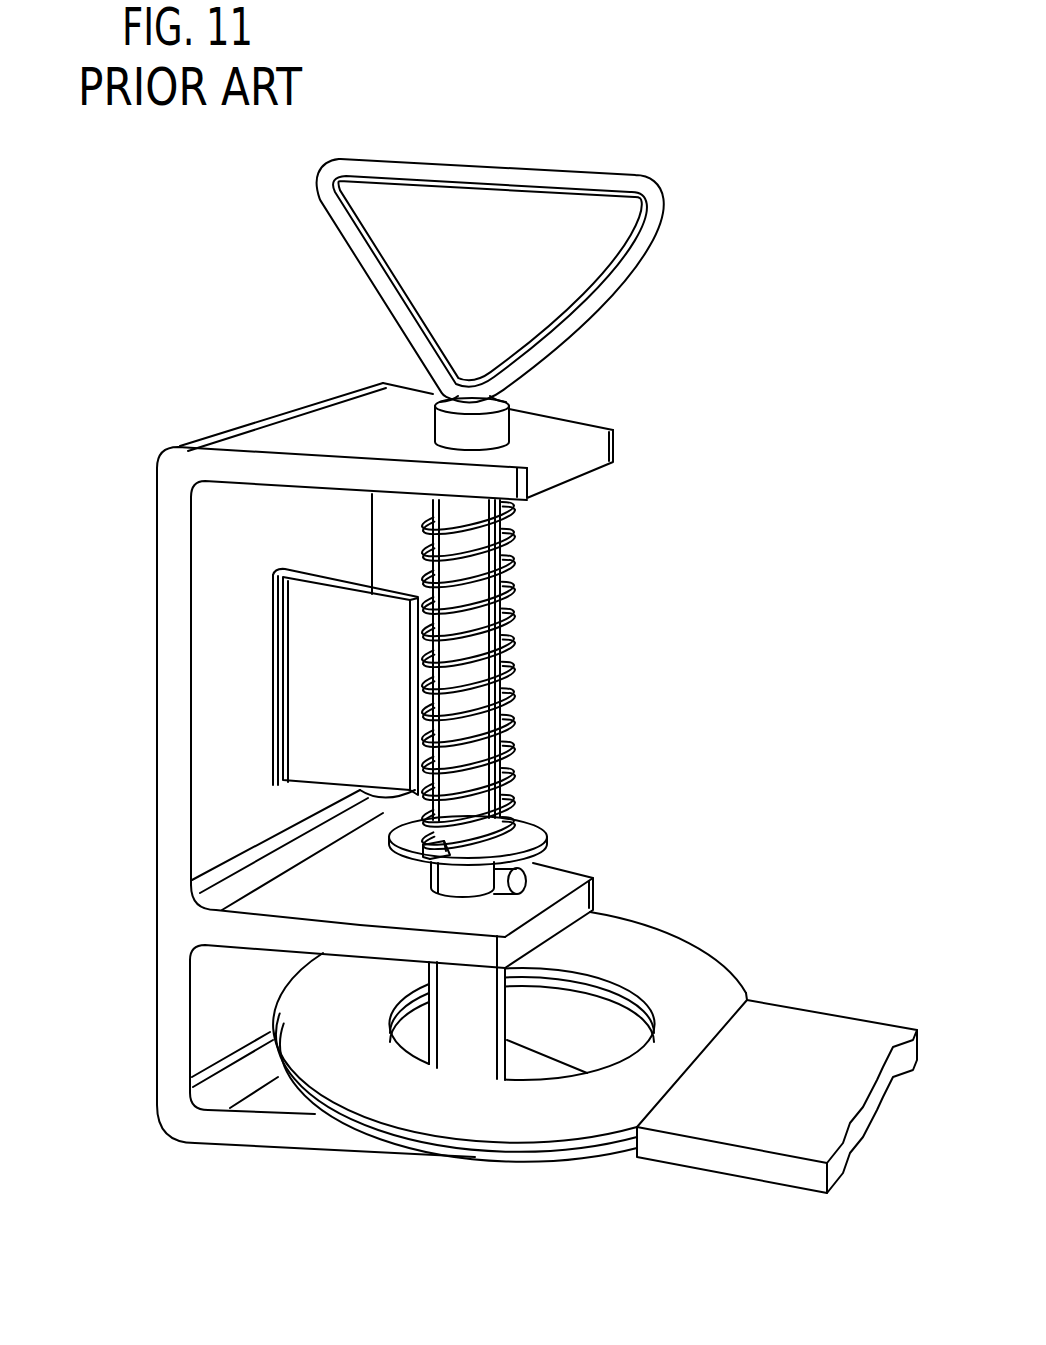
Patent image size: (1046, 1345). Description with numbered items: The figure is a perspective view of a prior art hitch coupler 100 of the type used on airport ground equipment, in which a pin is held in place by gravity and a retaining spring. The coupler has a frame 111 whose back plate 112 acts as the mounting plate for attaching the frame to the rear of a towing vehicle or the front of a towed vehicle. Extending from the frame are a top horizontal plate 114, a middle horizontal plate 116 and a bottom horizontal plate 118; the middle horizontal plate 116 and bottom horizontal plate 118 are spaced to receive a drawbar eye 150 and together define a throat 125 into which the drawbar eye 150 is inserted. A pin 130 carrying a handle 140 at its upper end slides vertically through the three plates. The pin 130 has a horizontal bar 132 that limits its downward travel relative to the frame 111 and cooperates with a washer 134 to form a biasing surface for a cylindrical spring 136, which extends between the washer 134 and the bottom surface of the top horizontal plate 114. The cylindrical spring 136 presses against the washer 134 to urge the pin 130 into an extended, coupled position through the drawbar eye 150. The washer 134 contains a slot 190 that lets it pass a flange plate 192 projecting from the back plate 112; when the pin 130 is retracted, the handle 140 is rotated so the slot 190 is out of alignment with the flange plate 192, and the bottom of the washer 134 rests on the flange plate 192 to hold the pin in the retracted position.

The hitch coupler 100 is at (189, 259).
The frame 111 is at (232, 428).
The back plate 112 is at (213, 562).
The top horizontal plate 114 is at (564, 430).
The middle horizontal plate 116 is at (562, 877).
The bottom horizontal plate 118 is at (227, 1143).
The throat 125 is at (277, 1095).
The pin 130 is at (512, 582).
The horizontal bar 132 is at (528, 873).
The washer 134 is at (528, 823).
The cylindrical spring 136 is at (523, 670).
The handle 140 is at (583, 176).
The drawbar eye 150 is at (660, 940).
The slot 190 is at (416, 864).
The flange plate 192 is at (310, 692).